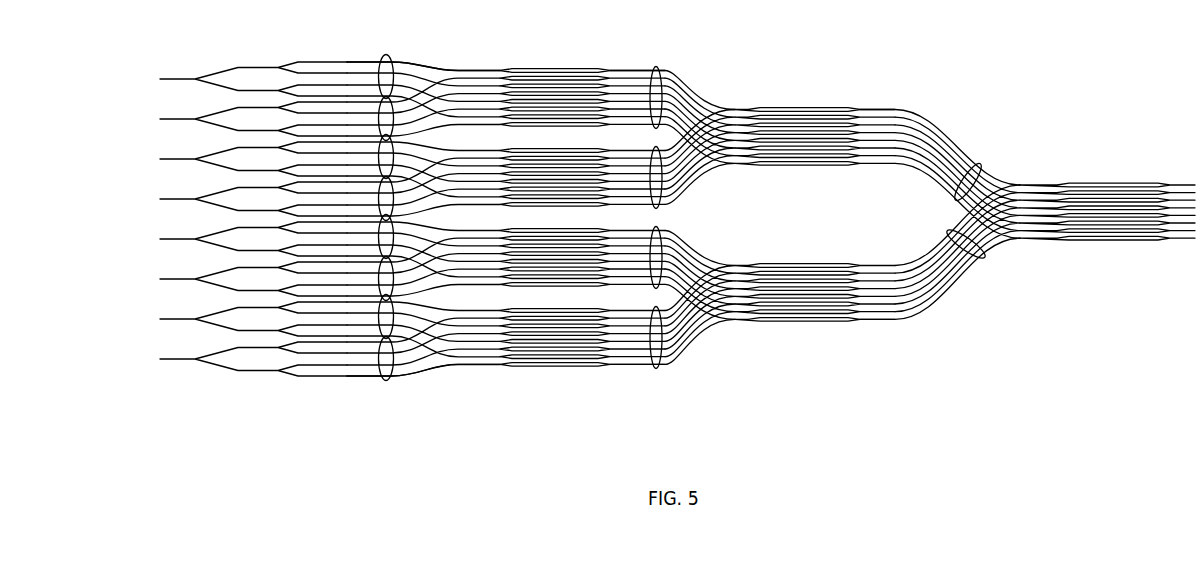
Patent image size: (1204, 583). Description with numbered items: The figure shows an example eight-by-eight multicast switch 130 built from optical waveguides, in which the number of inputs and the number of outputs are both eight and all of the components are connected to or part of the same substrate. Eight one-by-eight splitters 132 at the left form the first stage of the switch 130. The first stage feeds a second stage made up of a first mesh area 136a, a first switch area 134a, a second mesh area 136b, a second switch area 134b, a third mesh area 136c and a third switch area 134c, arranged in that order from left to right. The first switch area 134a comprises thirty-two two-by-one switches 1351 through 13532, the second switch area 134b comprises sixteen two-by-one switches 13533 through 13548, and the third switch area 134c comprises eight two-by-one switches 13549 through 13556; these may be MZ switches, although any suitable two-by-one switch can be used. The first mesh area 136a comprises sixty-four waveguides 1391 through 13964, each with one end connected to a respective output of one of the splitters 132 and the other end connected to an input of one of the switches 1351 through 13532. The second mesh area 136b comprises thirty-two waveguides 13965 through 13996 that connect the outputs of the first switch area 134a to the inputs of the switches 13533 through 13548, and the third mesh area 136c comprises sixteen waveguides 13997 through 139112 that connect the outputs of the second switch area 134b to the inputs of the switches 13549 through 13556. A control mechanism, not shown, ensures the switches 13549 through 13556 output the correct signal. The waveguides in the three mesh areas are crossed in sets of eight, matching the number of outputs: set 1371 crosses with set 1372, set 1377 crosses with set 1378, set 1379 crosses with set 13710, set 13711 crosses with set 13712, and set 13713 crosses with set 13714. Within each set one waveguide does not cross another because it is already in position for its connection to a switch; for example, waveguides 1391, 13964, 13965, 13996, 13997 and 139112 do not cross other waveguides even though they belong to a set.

The 8×8 multicast switch 130 is at (677, 233).
The 1×8 splitters 132 is at (207, 392).
The first switch area 134a is at (582, 234).
The second switch area 134b is at (815, 235).
The third switch area 134c is at (1107, 231).
The 2×1 switch 1351 is at (538, 69).
The 2×1 switch 13532 is at (580, 366).
The 2×1 switch 13533 is at (790, 108).
The 2×1 switch 13548 is at (820, 325).
The 2×1 switch 13549 is at (1100, 184).
The 2×1 switch 13556 is at (1148, 241).
The first mesh area 136a is at (416, 233).
The second mesh area 136b is at (663, 237).
The third mesh area 136c is at (940, 248).
The set of waveguides 1371 is at (386, 56).
The set of waveguides 1372 is at (428, 70).
The set of waveguides 1377 is at (448, 297).
The set of waveguides 1378 is at (391, 381).
The set of waveguides 1379 is at (657, 67).
The set of waveguides 13710 is at (659, 203).
The set of waveguides 13711 is at (659, 232).
The set of waveguides 13712 is at (657, 372).
The set of waveguides 13713 is at (976, 162).
The set of waveguides 13714 is at (984, 259).
The waveguide 1391 is at (366, 60).
The waveguide 13964 is at (372, 372).
The waveguide 13965 is at (622, 69).
The waveguide 13996 is at (630, 368).
The waveguide 13997 is at (940, 126).
The waveguide 139112 is at (939, 304).